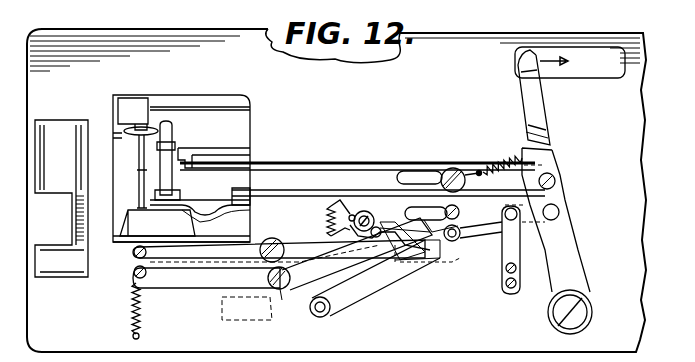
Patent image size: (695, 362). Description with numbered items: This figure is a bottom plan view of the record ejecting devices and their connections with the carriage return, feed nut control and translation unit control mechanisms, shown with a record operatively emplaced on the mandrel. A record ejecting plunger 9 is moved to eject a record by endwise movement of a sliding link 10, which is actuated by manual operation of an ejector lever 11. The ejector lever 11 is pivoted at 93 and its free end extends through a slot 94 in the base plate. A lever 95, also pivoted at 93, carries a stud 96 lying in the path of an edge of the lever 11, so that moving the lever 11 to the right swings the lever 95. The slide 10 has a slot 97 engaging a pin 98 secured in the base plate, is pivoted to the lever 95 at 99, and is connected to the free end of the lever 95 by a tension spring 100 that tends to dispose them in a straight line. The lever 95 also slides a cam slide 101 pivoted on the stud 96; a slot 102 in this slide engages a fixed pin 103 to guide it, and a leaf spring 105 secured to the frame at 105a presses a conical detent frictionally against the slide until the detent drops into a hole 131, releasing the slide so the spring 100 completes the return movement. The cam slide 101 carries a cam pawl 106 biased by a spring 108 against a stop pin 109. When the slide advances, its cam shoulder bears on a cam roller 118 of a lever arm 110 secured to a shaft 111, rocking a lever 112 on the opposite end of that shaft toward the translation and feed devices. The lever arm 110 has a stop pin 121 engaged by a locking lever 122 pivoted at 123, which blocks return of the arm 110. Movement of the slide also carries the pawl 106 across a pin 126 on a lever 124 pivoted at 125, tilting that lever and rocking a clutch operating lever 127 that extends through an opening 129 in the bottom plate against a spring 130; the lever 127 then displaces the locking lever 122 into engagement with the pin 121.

The record ejecting plunger 9 is at (215, 158).
The sliding link 10 is at (306, 160).
The ejector lever 11 is at (541, 104).
The pivot 93 is at (590, 317).
The slot 94 is at (590, 78).
The lever 95 is at (560, 196).
The stud 96 is at (560, 212).
The slot 97 is at (417, 171).
The pin 98 is at (453, 168).
The pivot 99 is at (556, 177).
The tension spring 100 is at (503, 160).
The cam slide 101 is at (490, 222).
The slot 102 is at (430, 220).
The pin 103 is at (500, 238).
The leaf spring 105 is at (519, 255).
The securing point of leaf spring 105a is at (508, 292).
The cam pawl 106 is at (368, 212).
The spring 108 is at (327, 210).
The stop pin 109 is at (351, 215).
The lever arm 110 is at (350, 300).
The shaft 111 is at (326, 316).
The lever 112 is at (262, 320).
The cam roller 118 is at (452, 242).
The stop pin 121 is at (412, 265).
The locking lever 122 is at (267, 240).
The pivot 123 is at (282, 245).
The lever 124 is at (178, 288).
The pivot 125 is at (287, 296).
The pin 126 is at (348, 285).
The clutch operating lever 127 is at (134, 278).
The opening 129 is at (134, 258).
The spring 130 is at (131, 322).
The hole 131 is at (504, 213).